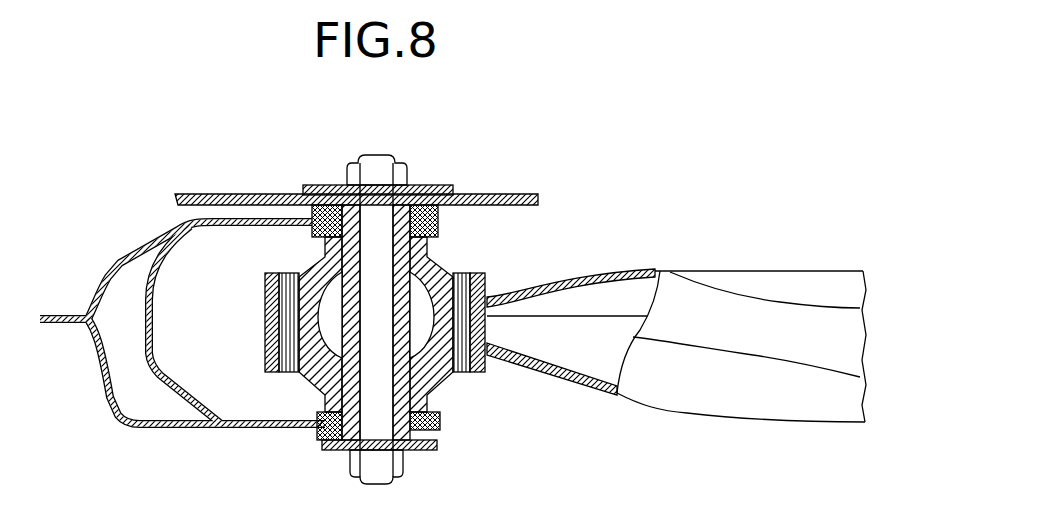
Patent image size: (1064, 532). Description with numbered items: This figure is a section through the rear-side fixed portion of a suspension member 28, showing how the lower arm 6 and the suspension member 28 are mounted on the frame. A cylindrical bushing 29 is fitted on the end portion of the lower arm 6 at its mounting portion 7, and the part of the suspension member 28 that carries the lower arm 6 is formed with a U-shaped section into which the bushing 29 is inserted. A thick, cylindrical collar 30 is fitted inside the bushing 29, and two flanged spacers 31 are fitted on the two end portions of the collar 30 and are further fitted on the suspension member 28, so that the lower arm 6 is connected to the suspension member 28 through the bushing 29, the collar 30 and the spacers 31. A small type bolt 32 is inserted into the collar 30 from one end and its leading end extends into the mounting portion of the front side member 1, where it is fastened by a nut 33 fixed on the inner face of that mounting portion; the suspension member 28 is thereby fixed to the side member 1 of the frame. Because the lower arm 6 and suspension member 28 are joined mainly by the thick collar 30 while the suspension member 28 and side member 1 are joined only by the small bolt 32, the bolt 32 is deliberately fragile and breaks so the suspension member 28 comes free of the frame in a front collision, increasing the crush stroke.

The side member 1 is at (500, 191).
The lower arm 6 is at (665, 270).
The mounting portion 7 is at (473, 386).
The suspension member 28 is at (220, 430).
The bushing 29 is at (462, 272).
The collar 30 is at (403, 423).
The flanged spacer 31 is at (320, 225).
The bolt 32 is at (376, 466).
The nut 33 is at (398, 170).